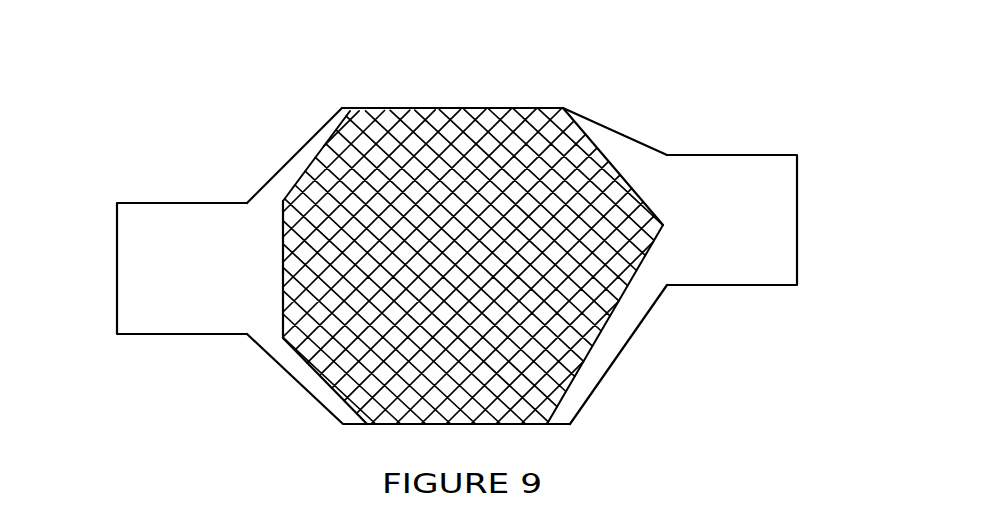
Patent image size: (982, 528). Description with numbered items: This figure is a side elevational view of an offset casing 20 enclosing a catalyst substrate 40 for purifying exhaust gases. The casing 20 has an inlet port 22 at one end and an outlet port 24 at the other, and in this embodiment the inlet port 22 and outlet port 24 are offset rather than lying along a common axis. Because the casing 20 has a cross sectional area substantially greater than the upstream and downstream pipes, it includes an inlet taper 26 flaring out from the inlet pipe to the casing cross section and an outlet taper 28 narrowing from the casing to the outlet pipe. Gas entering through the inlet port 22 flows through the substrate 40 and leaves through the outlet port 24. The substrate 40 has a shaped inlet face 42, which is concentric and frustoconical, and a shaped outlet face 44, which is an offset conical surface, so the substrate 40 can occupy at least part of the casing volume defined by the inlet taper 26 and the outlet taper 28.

The casing 20 is at (346, 93).
The inlet port 22 is at (112, 228).
The outlet port 24 is at (797, 160).
The inlet taper 26 is at (297, 143).
The outlet taper 28 is at (632, 340).
The catalyst substrate 40 is at (535, 135).
The inlet face 42 is at (297, 349).
The outlet face 44 is at (619, 171).